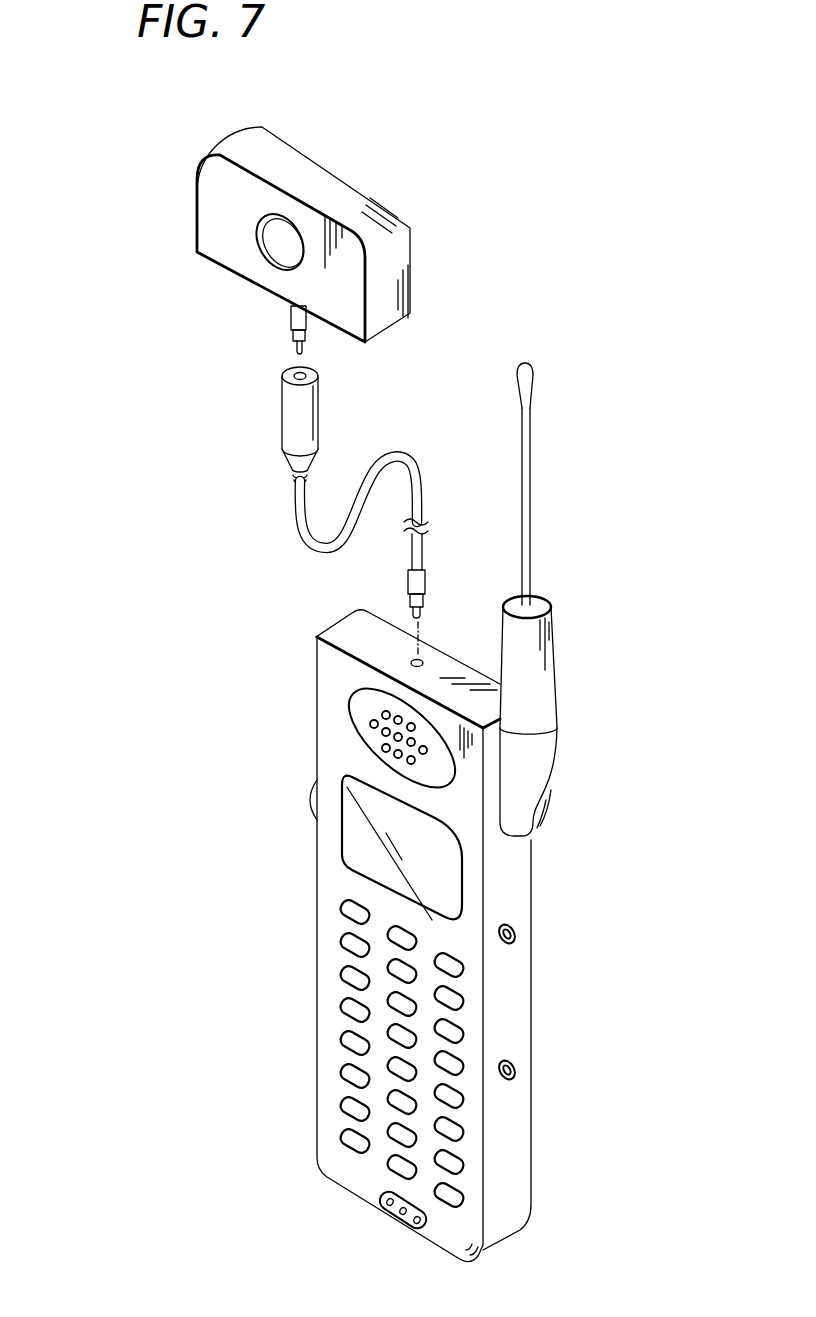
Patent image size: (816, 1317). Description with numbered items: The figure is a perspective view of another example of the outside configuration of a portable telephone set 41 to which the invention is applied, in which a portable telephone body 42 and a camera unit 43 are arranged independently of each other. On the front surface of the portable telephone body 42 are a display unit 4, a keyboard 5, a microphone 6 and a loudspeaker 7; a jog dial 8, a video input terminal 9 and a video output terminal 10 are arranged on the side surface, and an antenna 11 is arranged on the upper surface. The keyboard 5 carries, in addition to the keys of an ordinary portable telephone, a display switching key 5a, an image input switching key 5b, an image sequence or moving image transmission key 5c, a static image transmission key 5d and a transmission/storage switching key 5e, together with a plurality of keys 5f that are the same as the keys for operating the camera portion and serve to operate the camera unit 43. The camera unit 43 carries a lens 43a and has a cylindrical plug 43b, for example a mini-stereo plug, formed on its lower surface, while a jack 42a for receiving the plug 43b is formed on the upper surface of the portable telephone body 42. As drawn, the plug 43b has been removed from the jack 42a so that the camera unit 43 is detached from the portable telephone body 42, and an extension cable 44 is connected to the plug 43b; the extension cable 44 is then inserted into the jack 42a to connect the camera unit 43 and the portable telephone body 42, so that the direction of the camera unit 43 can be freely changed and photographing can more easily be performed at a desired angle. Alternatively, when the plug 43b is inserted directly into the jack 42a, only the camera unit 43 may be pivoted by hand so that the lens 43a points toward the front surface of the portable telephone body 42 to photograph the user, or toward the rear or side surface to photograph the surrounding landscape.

The portable telephone set 41 is at (397, 827).
The portable telephone body 42 is at (323, 848).
The jack 42a is at (411, 658).
The camera unit 43 is at (320, 153).
The lens 43a is at (287, 234).
The plug 43b is at (287, 318).
The extension cable 44 is at (297, 498).
The display unit 4 is at (462, 873).
The keyboard 5 is at (425, 1062).
The display switching key 5a is at (363, 1082).
The image input switching key 5b is at (412, 1110).
The moving image transmission key 5c is at (462, 1168).
The static image transmission key 5d is at (463, 1207).
The transmission/storage switching key 5e is at (465, 1140).
The keys 5f is at (328, 1159).
The microphone 6 is at (387, 1201).
The loudspeaker 7 is at (372, 710).
The jog dial 8 is at (308, 803).
The video input terminal 9 is at (511, 1062).
The video output terminal 10 is at (513, 940).
The antenna 11 is at (530, 460).